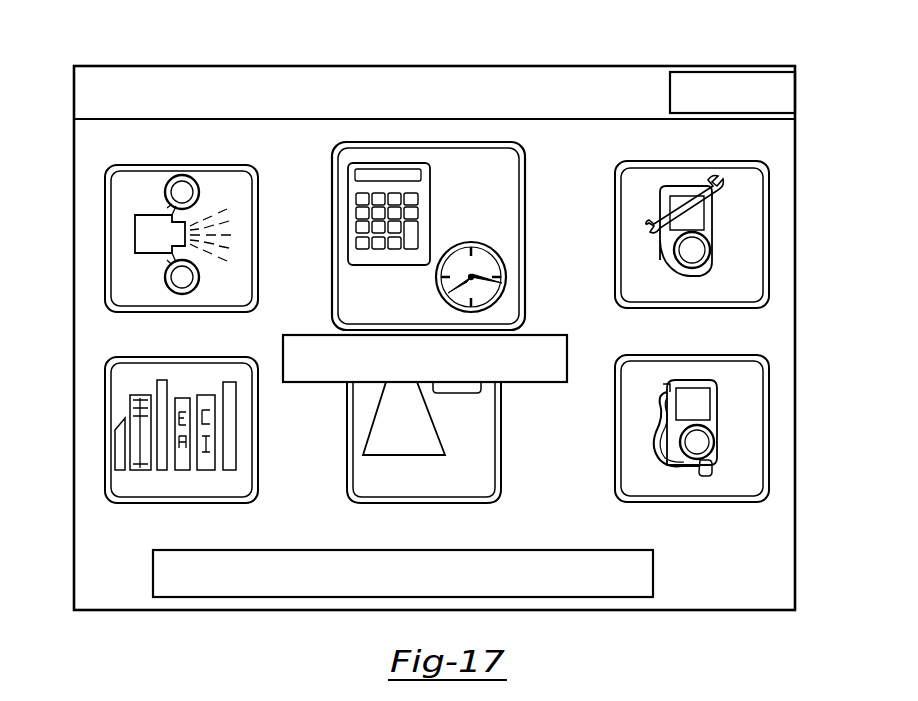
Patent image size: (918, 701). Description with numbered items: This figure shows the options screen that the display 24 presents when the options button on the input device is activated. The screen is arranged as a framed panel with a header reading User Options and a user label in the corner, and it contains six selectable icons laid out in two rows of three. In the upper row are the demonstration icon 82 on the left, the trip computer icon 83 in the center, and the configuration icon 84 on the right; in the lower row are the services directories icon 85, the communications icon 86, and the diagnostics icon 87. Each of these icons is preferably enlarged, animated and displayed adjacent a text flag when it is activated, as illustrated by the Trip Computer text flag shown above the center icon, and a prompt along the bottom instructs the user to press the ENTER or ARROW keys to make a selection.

The display 24 is at (197, 66).
The demonstration icon 82 is at (105, 231).
The trip computer icon 83 is at (524, 243).
The configuration icon 84 is at (770, 240).
The services directories icon 85 is at (105, 453).
The communications icon 86 is at (502, 466).
The diagnostics icon 87 is at (770, 463).